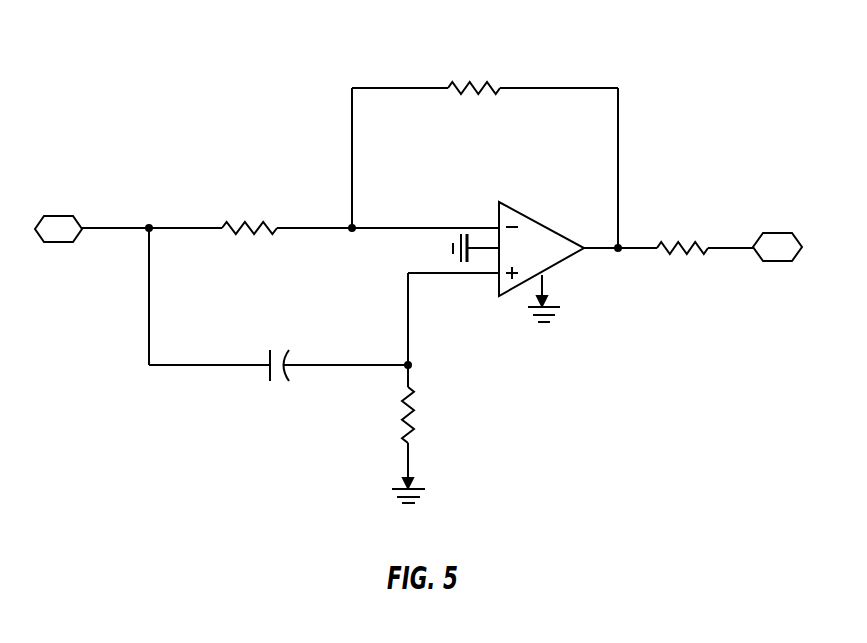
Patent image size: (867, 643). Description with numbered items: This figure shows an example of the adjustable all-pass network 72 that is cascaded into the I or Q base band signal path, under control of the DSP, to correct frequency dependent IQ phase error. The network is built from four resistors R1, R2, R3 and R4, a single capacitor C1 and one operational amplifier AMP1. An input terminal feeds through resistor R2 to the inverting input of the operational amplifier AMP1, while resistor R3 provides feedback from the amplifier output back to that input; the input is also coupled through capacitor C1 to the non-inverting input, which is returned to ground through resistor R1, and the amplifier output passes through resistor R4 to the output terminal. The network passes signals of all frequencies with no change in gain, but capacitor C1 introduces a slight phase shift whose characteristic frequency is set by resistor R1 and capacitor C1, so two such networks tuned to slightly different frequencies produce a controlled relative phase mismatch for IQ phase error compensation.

The adjustable all-pass network 72 is at (418, 275).
The resistor R1 is at (426, 415).
The resistor R2 is at (249, 211).
The resistor R3 is at (474, 72).
The resistor R4 is at (682, 230).
The capacitor C1 is at (281, 383).
The operational amplifier AMP1 is at (518, 283).